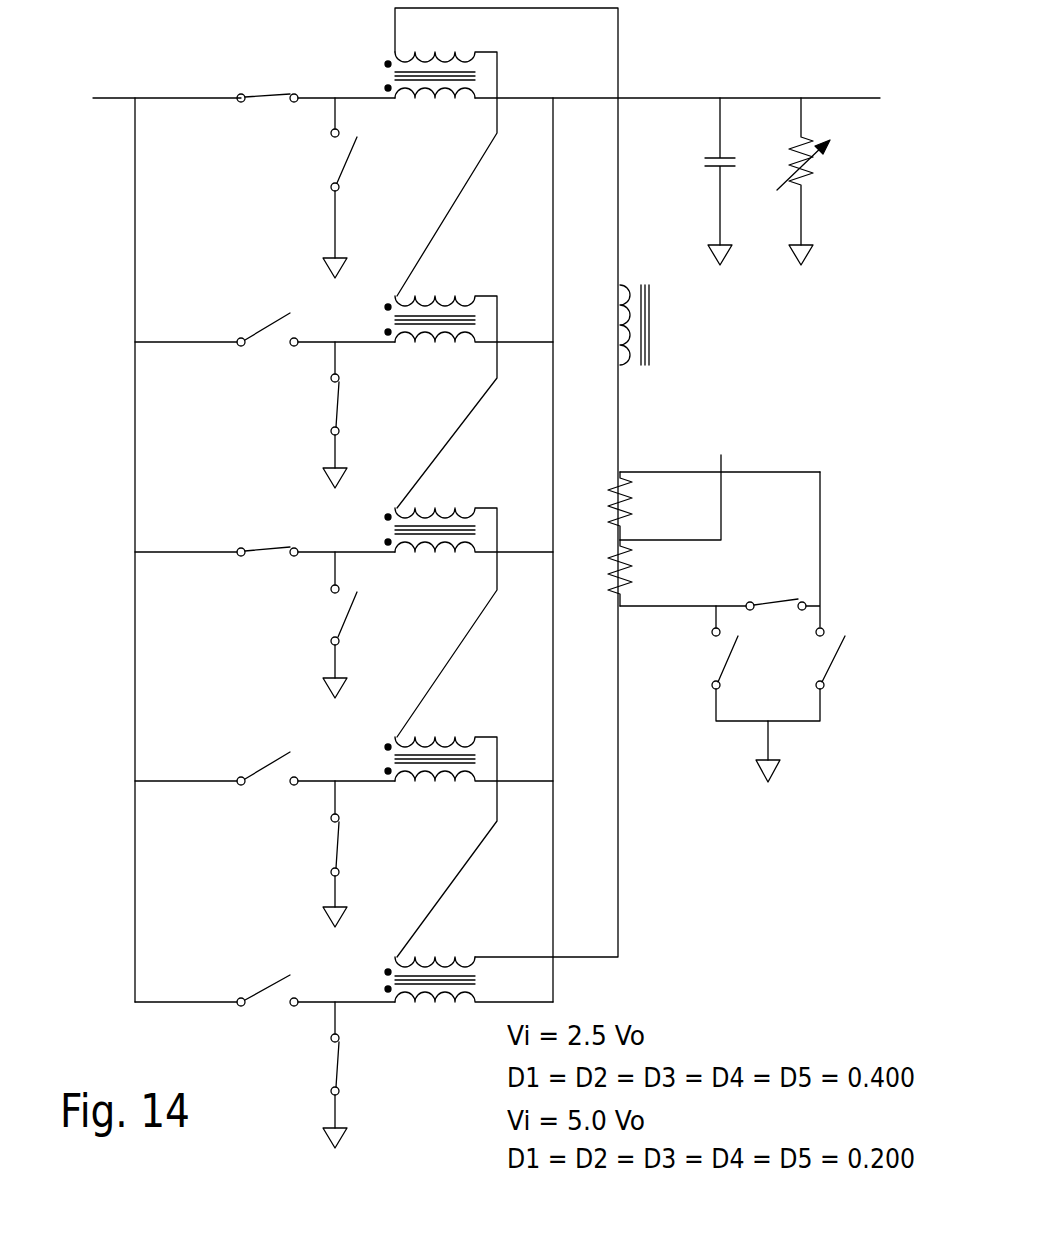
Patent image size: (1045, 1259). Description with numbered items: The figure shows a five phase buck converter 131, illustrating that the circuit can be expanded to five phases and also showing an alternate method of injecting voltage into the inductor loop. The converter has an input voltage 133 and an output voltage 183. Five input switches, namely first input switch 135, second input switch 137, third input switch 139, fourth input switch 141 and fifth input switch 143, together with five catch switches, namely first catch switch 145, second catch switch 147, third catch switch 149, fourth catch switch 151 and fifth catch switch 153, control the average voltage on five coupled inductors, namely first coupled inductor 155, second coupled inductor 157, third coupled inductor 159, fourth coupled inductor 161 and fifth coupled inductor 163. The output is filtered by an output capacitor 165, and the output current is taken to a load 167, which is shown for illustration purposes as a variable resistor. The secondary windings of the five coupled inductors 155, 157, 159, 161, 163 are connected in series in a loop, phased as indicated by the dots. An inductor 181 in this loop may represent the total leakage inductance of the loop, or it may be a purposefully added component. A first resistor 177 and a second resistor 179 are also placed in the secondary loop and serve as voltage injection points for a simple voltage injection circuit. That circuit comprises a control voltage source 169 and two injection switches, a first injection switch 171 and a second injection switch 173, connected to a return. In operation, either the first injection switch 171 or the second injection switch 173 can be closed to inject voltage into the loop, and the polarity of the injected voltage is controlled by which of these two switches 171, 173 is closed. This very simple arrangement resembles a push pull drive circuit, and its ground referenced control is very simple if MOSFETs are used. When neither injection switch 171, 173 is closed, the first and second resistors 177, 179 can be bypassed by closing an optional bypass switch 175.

The five phase buck converter 131 is at (203, 20).
The input voltage Vi 133 is at (90, 112).
The input switch S1a 135 is at (280, 80).
The input switch S2a 137 is at (243, 320).
The input switch S3a 139 is at (253, 540).
The input switch S4a 141 is at (238, 760).
The input switch S5a 143 is at (238, 1020).
The catch switch S1b 145 is at (316, 182).
The catch switch S2b 147 is at (320, 420).
The catch switch S3b 149 is at (328, 627).
The catch switch S4b 151 is at (320, 864).
The catch switch S5b 153 is at (318, 1068).
The coupled inductor T1 155 is at (355, 68).
The coupled inductor T2 157 is at (437, 280).
The coupled inductor T3 159 is at (452, 498).
The coupled inductor T4 161 is at (458, 792).
The coupled inductor T5 163 is at (457, 943).
The output capacitor C1 165 is at (687, 134).
The load 167 is at (813, 200).
The control voltage source Vp 169 is at (747, 434).
The switch Sca 171 is at (692, 676).
The switch Scb 173 is at (834, 678).
The optional switch Scc 175 is at (792, 597).
The resistor R1 177 is at (637, 485).
The resistor R2 179 is at (636, 582).
The inductor L 181 is at (662, 342).
The output voltage Vo 183 is at (873, 74).